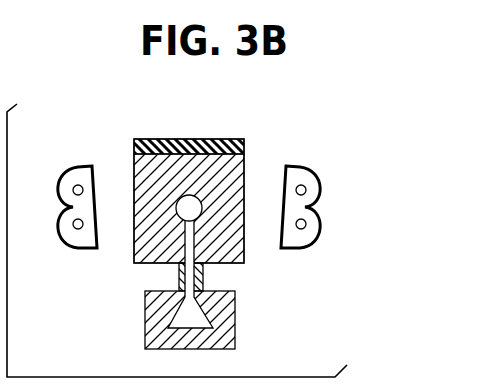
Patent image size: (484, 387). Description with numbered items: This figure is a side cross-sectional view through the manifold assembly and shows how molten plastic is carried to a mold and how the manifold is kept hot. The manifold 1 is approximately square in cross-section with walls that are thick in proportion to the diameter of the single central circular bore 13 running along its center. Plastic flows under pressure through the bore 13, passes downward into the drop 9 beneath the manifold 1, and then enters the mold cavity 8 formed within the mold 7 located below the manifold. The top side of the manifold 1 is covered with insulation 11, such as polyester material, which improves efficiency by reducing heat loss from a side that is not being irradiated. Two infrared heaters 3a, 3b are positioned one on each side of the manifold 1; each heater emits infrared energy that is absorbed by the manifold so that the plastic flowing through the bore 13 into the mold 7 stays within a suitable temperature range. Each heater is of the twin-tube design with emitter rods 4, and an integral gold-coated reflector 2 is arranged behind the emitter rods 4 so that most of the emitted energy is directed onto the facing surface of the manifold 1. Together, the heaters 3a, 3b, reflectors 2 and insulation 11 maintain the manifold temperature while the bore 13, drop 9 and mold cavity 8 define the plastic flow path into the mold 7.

The manifold 1 is at (133, 171).
The insulation 11 is at (160, 139).
The central circular bore 13 is at (202, 208).
The drop 9 is at (179, 275).
The mold cavity 8 is at (178, 317).
The mold 7 is at (235, 332).
The gold-coated reflector 2 is at (79, 166).
The infrared heater 3a is at (96, 250).
The infrared heater 3b is at (283, 250).
The emitter rods 4 is at (72, 221).